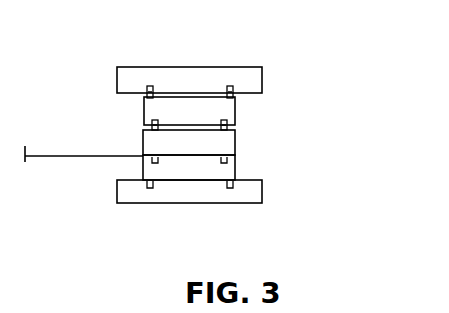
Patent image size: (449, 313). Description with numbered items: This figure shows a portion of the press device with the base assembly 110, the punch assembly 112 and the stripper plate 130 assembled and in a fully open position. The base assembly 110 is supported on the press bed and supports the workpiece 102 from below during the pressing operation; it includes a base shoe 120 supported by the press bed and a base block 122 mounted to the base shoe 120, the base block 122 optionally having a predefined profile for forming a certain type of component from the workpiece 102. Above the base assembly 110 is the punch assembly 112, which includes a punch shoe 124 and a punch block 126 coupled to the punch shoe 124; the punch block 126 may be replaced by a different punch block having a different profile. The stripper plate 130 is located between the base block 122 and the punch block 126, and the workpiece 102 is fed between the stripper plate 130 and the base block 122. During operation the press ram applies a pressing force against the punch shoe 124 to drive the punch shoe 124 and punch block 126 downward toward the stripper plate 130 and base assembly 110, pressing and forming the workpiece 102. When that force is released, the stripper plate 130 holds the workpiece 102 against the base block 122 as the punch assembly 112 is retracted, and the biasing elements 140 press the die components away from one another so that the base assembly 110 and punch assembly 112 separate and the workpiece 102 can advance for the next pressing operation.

The workpiece 102 is at (87, 156).
The base assembly 110 is at (339, 163).
The punch assembly 112 is at (327, 83).
The base shoe 120 is at (262, 197).
The base block 122 is at (237, 168).
The punch shoe 124 is at (262, 78).
The punch block 126 is at (235, 110).
The stripper plate 130 is at (237, 143).
The biasing elements 140 is at (232, 89).